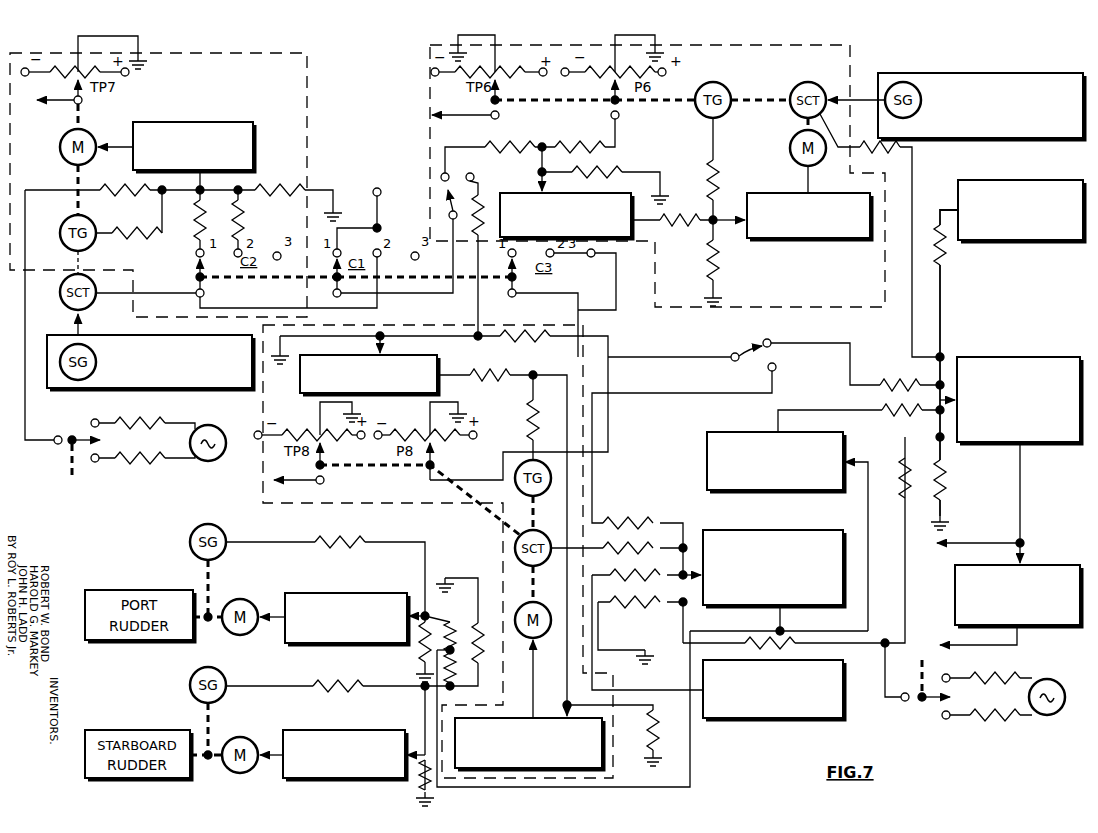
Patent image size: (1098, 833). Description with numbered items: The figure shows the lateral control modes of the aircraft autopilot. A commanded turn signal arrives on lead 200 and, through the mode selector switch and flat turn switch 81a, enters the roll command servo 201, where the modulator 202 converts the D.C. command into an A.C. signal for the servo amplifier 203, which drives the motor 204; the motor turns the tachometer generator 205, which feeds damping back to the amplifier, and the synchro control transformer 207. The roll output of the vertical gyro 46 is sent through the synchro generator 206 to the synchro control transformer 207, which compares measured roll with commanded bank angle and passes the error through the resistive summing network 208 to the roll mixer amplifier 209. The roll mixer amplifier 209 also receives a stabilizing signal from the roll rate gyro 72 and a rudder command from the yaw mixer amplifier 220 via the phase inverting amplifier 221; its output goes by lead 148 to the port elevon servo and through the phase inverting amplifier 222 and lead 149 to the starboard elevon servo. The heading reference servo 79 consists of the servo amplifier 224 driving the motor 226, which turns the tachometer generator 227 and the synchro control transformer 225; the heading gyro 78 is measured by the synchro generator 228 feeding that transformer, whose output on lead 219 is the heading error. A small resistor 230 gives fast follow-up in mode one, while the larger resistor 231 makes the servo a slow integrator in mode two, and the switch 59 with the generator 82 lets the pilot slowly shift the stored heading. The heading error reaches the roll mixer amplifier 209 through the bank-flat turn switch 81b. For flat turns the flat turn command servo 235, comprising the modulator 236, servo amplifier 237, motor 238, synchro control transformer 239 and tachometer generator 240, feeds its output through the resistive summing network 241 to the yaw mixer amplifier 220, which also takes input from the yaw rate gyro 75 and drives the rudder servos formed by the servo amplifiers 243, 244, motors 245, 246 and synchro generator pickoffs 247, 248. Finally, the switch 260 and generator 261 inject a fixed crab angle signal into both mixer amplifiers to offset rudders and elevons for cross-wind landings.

The vertical gyro 46 is at (971, 76).
The switch 59 is at (62, 444).
The roll rate gyro 72 is at (1033, 180).
The yaw rate gyro 75 is at (816, 703).
The heading gyro 78 is at (213, 378).
The heading reference servo 79 is at (296, 124).
The flat turn switch 81a is at (448, 200).
The bank-flat turn switch 81b is at (776, 361).
The generator 82 is at (222, 458).
The lead 148 is at (1006, 543).
The lead 149 is at (1003, 644).
The lead 200 is at (370, 225).
The roll command servo 201 is at (806, 299).
The roll command servo modulator 202 is at (514, 193).
The servo amplifier 203 is at (830, 238).
The motor 204 is at (792, 144).
The tachometer generator 205 is at (727, 88).
The synchro generator 206 is at (904, 82).
The synchro control transformer 207 is at (818, 86).
The resistive summing network 208 is at (906, 373).
The roll mixer amplifier 209 is at (1045, 364).
The lead 219 is at (232, 308).
The yaw mixer amplifier 220 is at (825, 546).
The phase inverting amplifier 221 is at (737, 434).
The phase inverting amplifier 222 is at (1066, 570).
The servo amplifier 224 is at (234, 124).
The synchro control transformer 225 is at (62, 288).
The motor 226 is at (84, 136).
The tachometer generator 227 is at (92, 243).
The synchro generator 228 is at (67, 392).
The resistor 230 is at (196, 226).
The resistor 231 is at (246, 210).
The flat turn command servo 235 is at (409, 488).
The modulator 236 is at (430, 366).
The servo amplifier 237 is at (559, 725).
The motor 238 is at (542, 606).
The synchro control transformer 239 is at (551, 538).
The tachometer generator 240 is at (546, 484).
The resistive summing network 241 is at (658, 536).
The servo amplifier 243 is at (370, 594).
The servo amplifier 244 is at (352, 730).
The motor 245 is at (240, 598).
The motor 246 is at (242, 737).
The synchro generator pickoff 247 is at (222, 532).
The synchro generator pickoff 248 is at (222, 675).
The switch 260 is at (922, 708).
The generator 261 is at (1056, 713).